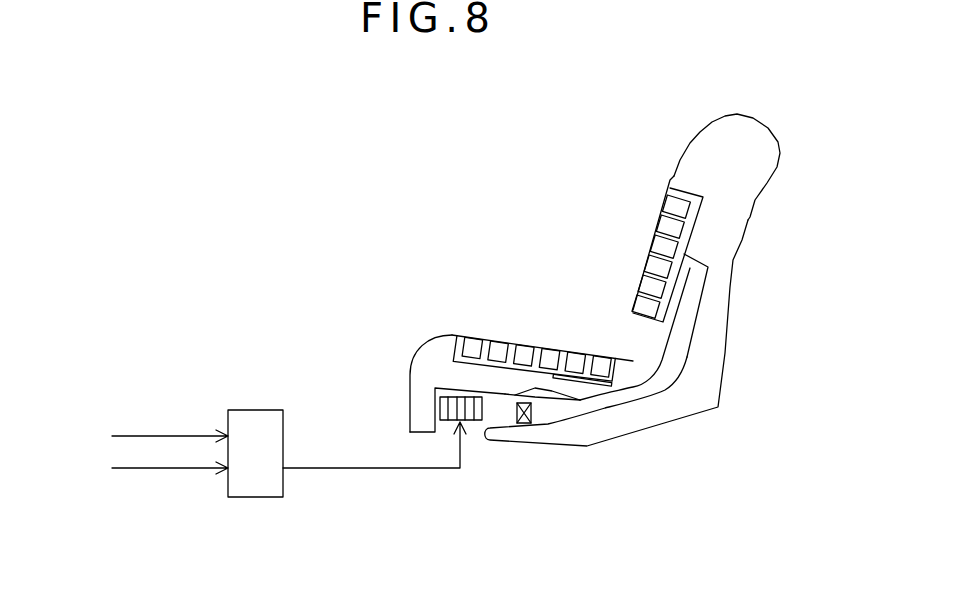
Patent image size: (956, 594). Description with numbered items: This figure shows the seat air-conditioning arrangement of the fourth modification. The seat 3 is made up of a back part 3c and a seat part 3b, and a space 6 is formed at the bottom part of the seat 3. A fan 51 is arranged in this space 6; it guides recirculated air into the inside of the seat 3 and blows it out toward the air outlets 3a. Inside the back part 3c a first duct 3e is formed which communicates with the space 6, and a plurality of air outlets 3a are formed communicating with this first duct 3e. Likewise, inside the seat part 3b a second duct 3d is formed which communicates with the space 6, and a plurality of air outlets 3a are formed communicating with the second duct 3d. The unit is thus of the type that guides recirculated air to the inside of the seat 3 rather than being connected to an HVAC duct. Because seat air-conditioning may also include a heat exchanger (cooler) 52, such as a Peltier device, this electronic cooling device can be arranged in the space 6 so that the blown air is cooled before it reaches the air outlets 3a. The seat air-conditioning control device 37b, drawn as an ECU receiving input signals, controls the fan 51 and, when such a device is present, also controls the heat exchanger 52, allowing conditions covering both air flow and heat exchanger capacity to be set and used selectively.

The seat 3 is at (652, 138).
The air outlets 3a is at (665, 204).
The seat part 3b is at (445, 332).
The back part 3c is at (735, 113).
The second duct 3d is at (578, 380).
The first duct 3e is at (697, 287).
The space 6 is at (463, 393).
The fan 51 is at (502, 405).
The heat exchanger (cooler) 52 is at (521, 425).
The seat air-conditioning control device 37b is at (257, 408).